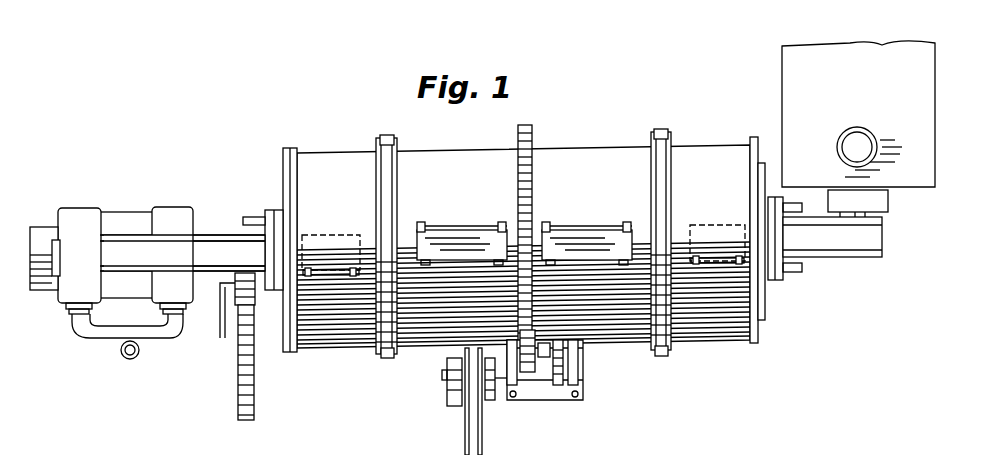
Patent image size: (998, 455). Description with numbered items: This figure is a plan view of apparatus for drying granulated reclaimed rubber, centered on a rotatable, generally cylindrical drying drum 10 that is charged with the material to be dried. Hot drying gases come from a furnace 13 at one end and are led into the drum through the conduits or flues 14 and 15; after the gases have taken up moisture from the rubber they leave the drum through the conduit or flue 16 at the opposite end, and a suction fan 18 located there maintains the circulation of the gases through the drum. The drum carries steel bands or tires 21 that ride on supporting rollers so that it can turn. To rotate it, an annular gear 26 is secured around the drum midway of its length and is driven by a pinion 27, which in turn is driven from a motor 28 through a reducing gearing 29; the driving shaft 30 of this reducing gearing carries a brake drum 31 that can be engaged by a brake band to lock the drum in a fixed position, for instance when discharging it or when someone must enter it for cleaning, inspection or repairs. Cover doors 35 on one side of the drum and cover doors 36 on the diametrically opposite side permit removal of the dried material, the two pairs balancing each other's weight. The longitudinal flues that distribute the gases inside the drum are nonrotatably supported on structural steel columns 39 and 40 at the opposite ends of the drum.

The drying drum 10 is at (580, 158).
The furnace 13 is at (925, 100).
The conduit or flue 14 is at (872, 230).
The conduit or flue 15 is at (838, 214).
The conduit or flue 16 is at (213, 262).
The suction fan 18 is at (165, 207).
The steel bands or tires 21 is at (392, 143).
The annular gear 26 is at (533, 131).
The pinion 27 is at (530, 370).
The motor 28 is at (575, 454).
The reducing gearing 29 is at (563, 378).
The driving shaft 30 is at (528, 382).
The brake drum 31 is at (491, 400).
The cover doors 35 is at (470, 258).
The cover doors 36 is at (333, 283).
The structural steel column 39 is at (268, 212).
The structural steel column 40 is at (775, 198).